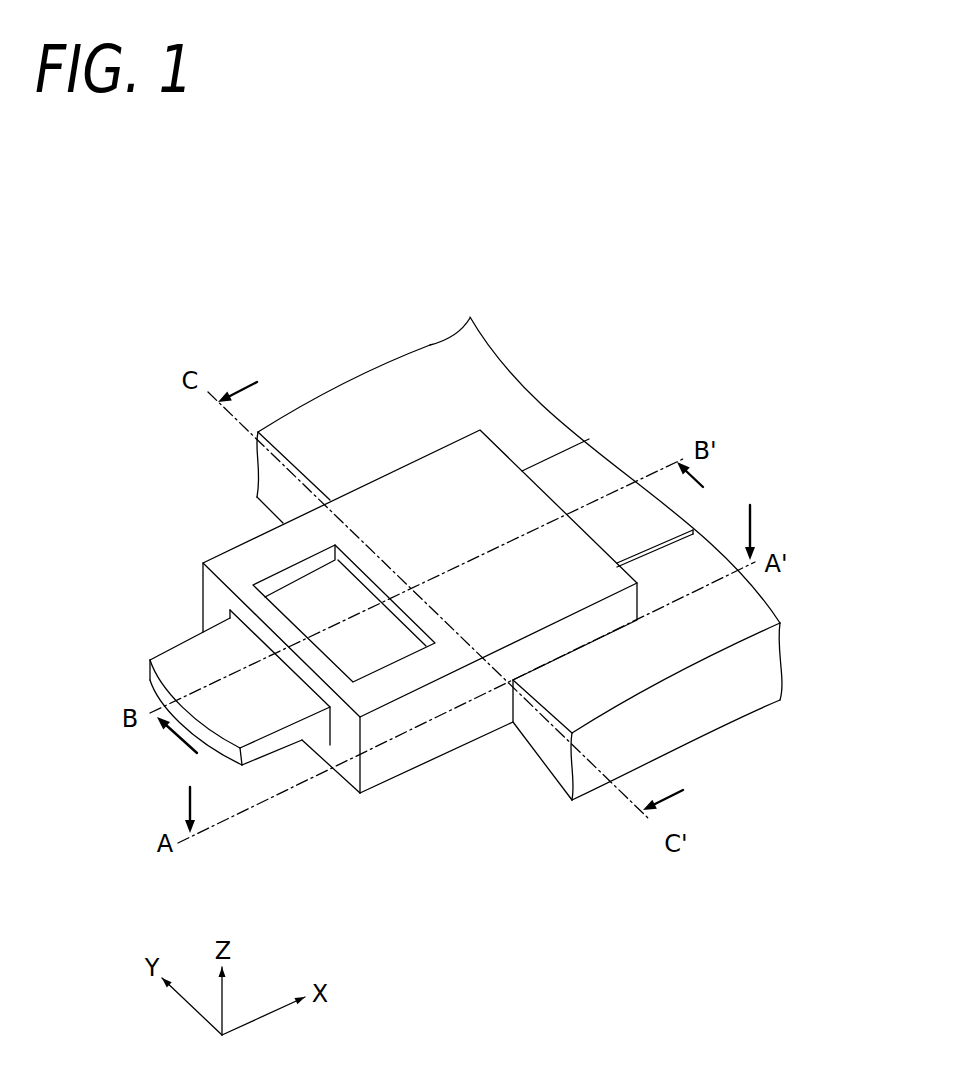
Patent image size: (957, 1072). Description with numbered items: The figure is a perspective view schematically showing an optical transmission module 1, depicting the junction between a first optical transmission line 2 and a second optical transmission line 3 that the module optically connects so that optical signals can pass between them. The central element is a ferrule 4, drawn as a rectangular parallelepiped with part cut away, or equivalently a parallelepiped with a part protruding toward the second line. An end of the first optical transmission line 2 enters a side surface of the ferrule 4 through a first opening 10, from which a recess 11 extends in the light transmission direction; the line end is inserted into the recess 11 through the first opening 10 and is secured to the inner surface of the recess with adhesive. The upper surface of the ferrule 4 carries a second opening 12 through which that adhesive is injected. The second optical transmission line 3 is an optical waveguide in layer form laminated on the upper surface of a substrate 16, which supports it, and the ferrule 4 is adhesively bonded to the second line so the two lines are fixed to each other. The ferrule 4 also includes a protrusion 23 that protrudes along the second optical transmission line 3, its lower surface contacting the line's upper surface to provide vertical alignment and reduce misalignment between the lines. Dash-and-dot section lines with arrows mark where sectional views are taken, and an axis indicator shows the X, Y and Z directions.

The optical transmission module 1 is at (220, 340).
The first optical transmission line 2 is at (202, 655).
The second optical transmission line 3 is at (580, 470).
The ferrule 4 is at (478, 455).
The first opening 10 is at (280, 756).
The recess 11 is at (322, 737).
The second opening 12 is at (303, 573).
The substrate 16 is at (493, 395).
The protrusion 23 is at (597, 626).